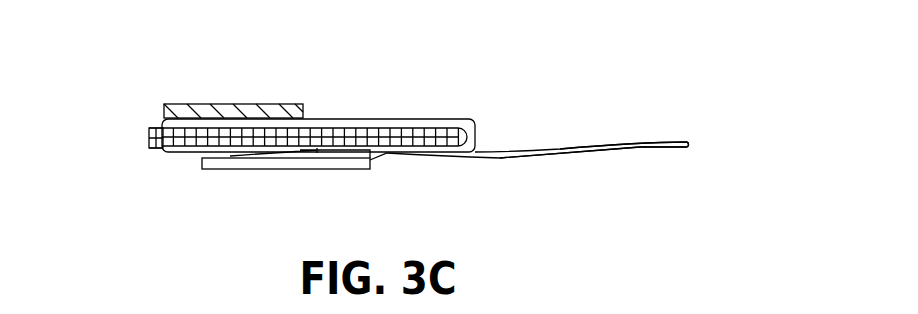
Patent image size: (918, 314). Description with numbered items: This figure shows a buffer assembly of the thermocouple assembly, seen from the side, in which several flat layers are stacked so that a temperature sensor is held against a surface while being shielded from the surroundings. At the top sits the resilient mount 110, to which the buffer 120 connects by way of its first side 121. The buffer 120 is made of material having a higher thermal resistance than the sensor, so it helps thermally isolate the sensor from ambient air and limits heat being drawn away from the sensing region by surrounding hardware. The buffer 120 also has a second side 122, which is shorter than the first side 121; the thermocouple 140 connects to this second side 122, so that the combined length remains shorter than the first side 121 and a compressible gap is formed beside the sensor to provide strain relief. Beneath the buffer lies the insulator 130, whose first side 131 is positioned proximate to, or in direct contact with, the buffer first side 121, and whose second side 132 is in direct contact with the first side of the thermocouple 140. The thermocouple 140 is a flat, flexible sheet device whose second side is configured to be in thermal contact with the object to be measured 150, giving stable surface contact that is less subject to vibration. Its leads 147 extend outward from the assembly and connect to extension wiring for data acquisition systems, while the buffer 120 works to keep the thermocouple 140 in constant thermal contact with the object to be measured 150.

The resilient mount 110 is at (225, 104).
The buffer 120 is at (540, 97).
The first side of buffer 121 is at (357, 115).
The second side of buffer 122 is at (385, 152).
The insulator 130 is at (123, 132).
The first side of insulator 131 is at (154, 127).
The second side of insulator 132 is at (154, 148).
The thermocouple 140 is at (317, 154).
The leads 147 is at (582, 152).
The object to be measured 150 is at (230, 162).